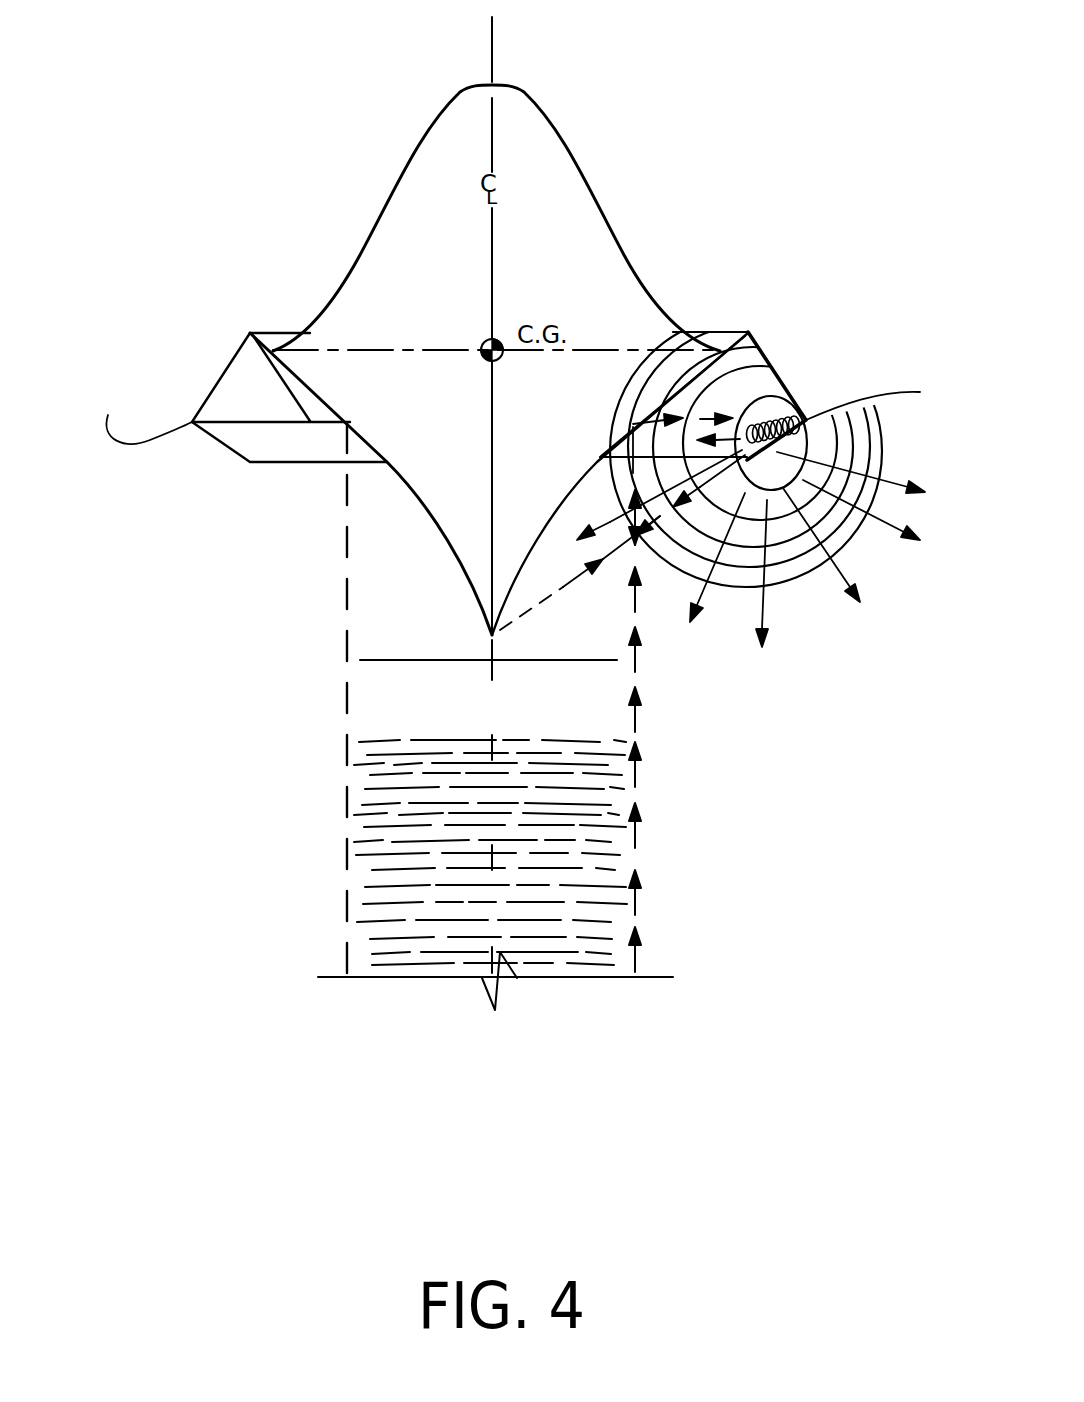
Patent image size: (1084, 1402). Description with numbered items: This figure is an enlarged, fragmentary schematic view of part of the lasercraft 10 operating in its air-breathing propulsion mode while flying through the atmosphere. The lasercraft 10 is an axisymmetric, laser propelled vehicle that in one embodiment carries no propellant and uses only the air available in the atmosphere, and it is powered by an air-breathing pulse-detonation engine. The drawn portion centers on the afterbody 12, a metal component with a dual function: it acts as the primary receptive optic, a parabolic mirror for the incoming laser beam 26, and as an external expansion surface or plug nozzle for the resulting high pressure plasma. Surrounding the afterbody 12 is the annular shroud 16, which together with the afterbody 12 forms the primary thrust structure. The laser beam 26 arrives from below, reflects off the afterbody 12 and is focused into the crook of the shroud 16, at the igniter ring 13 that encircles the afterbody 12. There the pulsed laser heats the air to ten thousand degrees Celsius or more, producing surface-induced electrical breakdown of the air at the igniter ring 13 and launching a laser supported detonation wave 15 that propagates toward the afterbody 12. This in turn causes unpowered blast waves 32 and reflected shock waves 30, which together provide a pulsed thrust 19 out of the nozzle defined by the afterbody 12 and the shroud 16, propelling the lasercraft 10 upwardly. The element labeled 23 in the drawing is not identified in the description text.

The lasercraft 10 is at (670, 114).
The afterbody 12 is at (420, 502).
The igniter ring 13 is at (247, 347).
The laser supported detonation wave 15 is at (782, 412).
The annular shroud 16 is at (746, 398).
The pulsed thrust 19 is at (758, 608).
The fin 23 is at (223, 443).
The laser beam 26 is at (585, 835).
The reflected shock waves 30 is at (683, 405).
The unpowered blast waves 32 is at (838, 596).